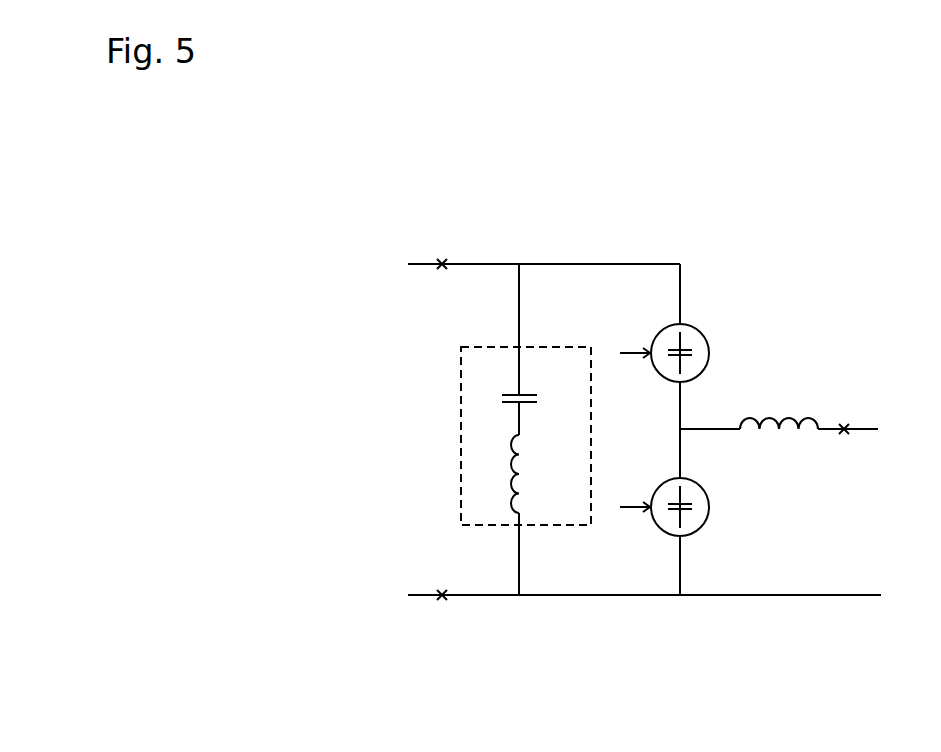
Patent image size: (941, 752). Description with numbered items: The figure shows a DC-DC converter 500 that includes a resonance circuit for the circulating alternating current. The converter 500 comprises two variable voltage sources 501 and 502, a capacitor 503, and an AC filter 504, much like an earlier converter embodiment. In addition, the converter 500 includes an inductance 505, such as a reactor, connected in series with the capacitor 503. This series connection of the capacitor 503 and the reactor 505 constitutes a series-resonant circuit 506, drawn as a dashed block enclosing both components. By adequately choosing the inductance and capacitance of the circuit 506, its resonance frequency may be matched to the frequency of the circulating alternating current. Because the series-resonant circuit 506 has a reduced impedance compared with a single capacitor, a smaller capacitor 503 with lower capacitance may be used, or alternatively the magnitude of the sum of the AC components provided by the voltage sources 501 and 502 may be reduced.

The converter 500 is at (353, 703).
The variable voltage source 501 is at (697, 353).
The variable voltage source 502 is at (697, 507).
The capacitor 503 is at (543, 380).
The AC filter 504 is at (779, 444).
The inductance 505 is at (547, 474).
The series-resonant circuit 506 is at (493, 436).